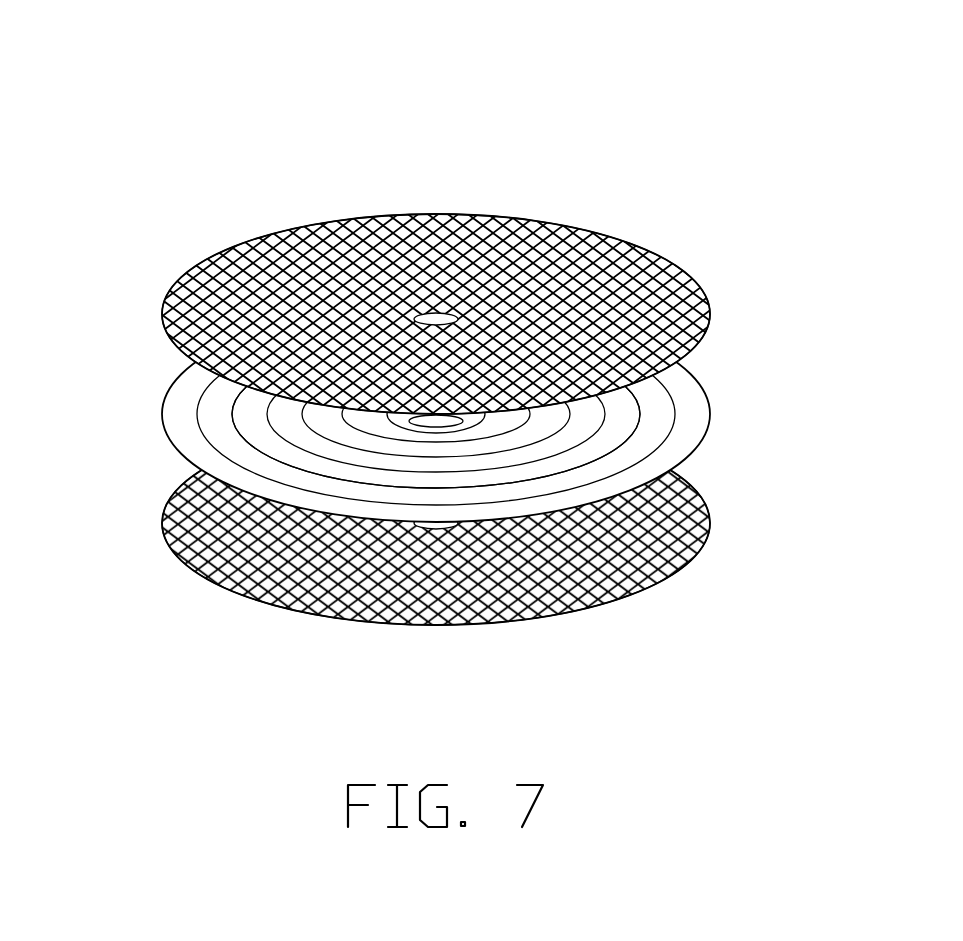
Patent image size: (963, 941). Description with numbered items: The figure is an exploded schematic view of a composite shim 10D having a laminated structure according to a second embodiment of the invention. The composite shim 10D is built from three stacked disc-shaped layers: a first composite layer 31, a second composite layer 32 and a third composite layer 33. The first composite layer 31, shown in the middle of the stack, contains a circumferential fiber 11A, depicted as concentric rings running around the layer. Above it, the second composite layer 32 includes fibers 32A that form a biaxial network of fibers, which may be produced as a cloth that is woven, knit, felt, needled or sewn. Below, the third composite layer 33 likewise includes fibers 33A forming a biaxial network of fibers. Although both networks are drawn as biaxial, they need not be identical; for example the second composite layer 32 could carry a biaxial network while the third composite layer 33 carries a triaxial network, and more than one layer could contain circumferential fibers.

The composite shim 10D is at (167, 168).
The first composite layer 31 is at (712, 424).
The second composite layer 32 is at (707, 300).
The fibers 32A is at (617, 238).
The third composite layer 33 is at (655, 583).
The fibers 33A is at (700, 500).
The circumferential fiber 11A is at (648, 402).